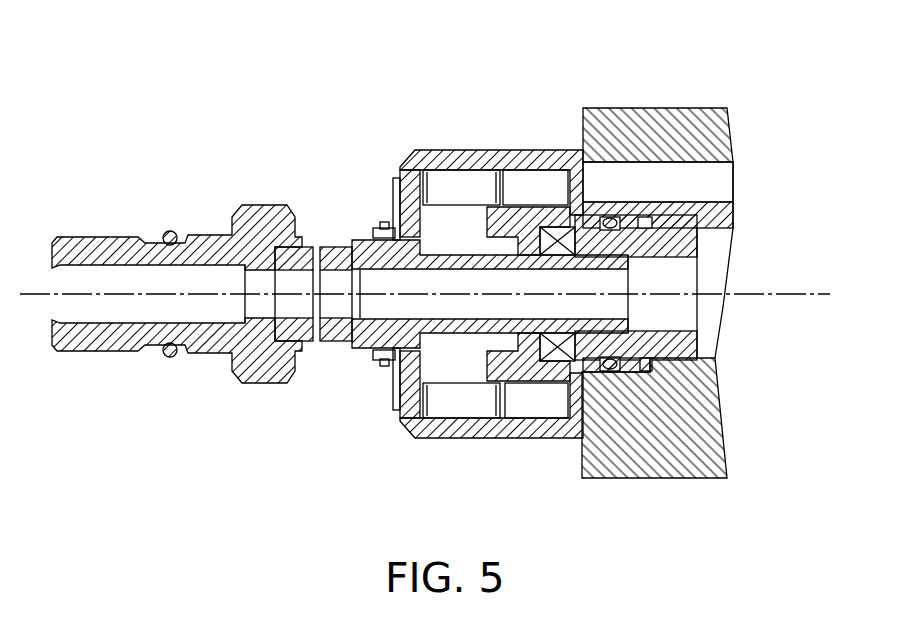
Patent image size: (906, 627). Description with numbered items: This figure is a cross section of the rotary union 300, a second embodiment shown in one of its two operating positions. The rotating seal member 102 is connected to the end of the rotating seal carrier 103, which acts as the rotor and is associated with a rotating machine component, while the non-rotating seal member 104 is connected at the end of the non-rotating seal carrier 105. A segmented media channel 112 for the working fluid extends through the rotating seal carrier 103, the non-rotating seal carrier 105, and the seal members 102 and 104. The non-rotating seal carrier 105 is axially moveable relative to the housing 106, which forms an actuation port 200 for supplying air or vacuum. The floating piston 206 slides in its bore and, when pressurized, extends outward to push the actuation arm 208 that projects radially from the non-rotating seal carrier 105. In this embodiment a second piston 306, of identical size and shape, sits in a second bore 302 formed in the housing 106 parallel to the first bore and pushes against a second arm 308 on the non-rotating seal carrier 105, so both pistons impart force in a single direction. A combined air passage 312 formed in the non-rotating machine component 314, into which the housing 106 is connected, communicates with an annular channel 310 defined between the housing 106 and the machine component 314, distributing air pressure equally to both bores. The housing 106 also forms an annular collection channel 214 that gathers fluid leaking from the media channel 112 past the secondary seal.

The rotary union 300 is at (335, 100).
The rotating seal carrier 103 is at (210, 232).
The rotating seal member 102 is at (308, 247).
The non-rotating seal member 104 is at (332, 247).
The non-rotating seal carrier 105 is at (356, 352).
The second arm 308 is at (403, 420).
The actuation arm 208 is at (415, 177).
The actuation port 200 is at (575, 197).
The floating piston 206 is at (485, 180).
The second piston 306 is at (453, 412).
The second bore 302 is at (550, 412).
The collection channel 214 is at (505, 345).
The housing 106 is at (683, 242).
The annular channel 310 is at (576, 390).
The media channel 112 is at (694, 316).
The combined air passage 312 is at (725, 177).
The non-rotating machine component 314 is at (712, 138).